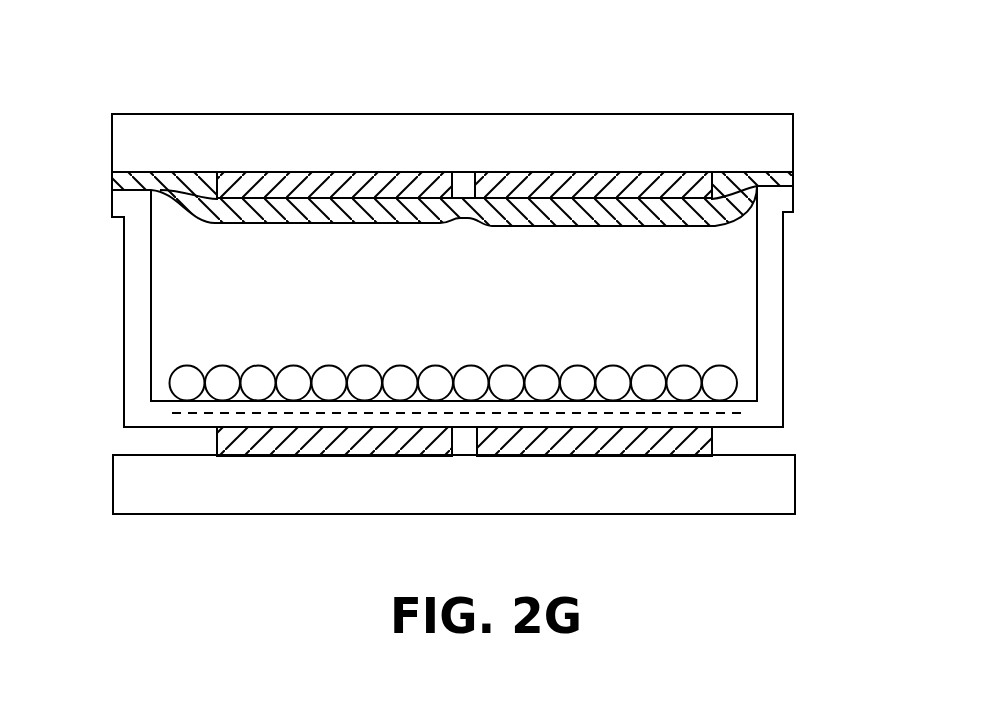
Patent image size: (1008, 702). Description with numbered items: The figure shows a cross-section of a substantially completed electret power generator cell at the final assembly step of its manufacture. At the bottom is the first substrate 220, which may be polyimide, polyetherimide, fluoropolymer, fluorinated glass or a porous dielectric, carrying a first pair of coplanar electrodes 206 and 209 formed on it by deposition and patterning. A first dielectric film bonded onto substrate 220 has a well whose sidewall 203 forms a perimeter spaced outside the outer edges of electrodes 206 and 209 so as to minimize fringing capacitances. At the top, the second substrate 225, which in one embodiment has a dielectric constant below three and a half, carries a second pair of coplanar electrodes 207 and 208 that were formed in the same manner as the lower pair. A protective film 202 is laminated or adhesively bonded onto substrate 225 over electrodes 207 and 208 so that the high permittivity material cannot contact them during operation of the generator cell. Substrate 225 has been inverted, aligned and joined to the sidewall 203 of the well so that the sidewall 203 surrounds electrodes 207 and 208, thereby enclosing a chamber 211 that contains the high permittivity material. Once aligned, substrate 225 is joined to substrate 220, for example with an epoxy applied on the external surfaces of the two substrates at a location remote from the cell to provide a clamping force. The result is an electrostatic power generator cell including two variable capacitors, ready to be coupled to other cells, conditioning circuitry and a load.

The protective film 202 is at (790, 172).
The sidewall 203 is at (783, 315).
The electrode 206 is at (330, 440).
The electrode 207 is at (330, 182).
The electrode 208 is at (608, 180).
The electrode 209 is at (600, 440).
The chamber 211 is at (180, 292).
The first substrate 220 is at (113, 487).
The substrate 225 is at (112, 140).